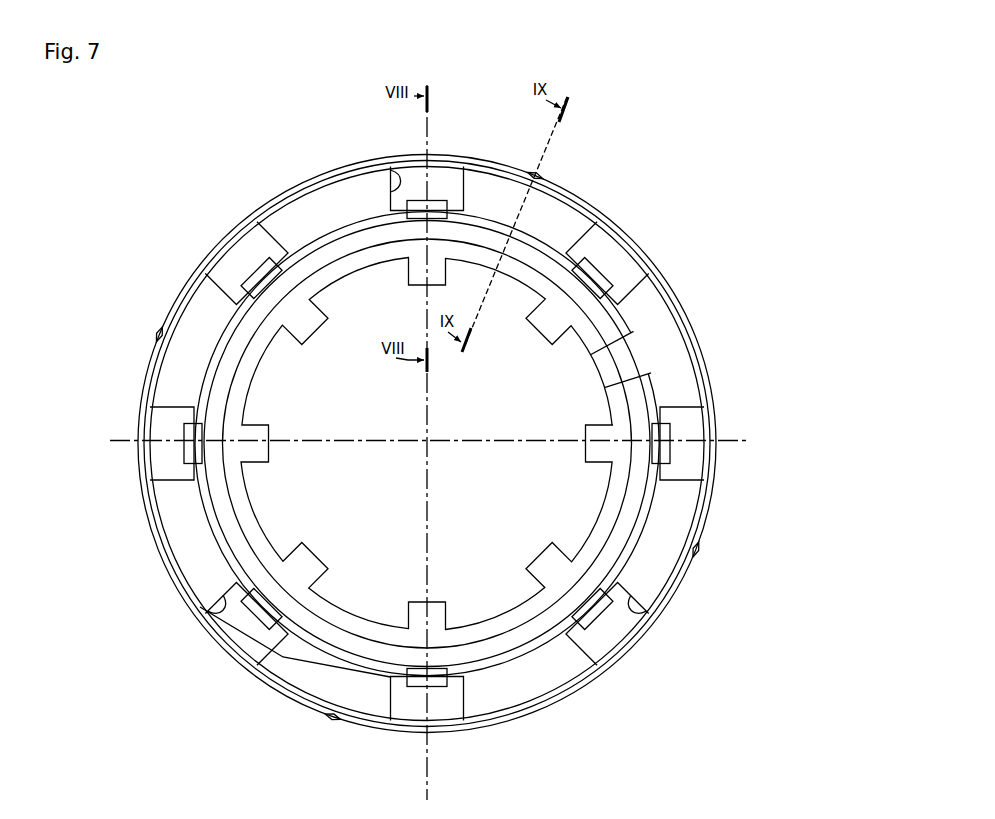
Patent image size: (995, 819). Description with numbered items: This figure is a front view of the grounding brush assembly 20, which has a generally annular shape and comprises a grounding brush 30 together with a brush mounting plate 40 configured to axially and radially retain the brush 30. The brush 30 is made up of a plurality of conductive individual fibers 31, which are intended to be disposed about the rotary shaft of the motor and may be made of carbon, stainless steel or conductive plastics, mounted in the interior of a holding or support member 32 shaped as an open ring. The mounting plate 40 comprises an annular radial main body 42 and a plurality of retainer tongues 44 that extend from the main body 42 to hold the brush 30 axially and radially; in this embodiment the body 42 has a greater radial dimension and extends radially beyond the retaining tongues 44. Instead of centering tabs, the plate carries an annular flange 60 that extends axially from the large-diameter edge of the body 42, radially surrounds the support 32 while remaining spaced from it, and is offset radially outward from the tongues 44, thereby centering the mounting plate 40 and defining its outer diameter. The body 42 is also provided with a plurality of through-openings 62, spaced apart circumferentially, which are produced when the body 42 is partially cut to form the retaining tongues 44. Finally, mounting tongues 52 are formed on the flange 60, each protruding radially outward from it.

The grounding brush assembly 20 is at (691, 128).
The grounding brush 30 is at (641, 503).
The conductive individual fibers 31 is at (510, 623).
The support member 32 is at (321, 642).
The brush mounting plate 40 is at (613, 185).
The annular radial main body 42 is at (670, 343).
The retainer tongues 44 is at (437, 204).
The mounting tongues 52 is at (535, 170).
The annular flange 60 is at (310, 181).
The through-openings 62 is at (394, 172).